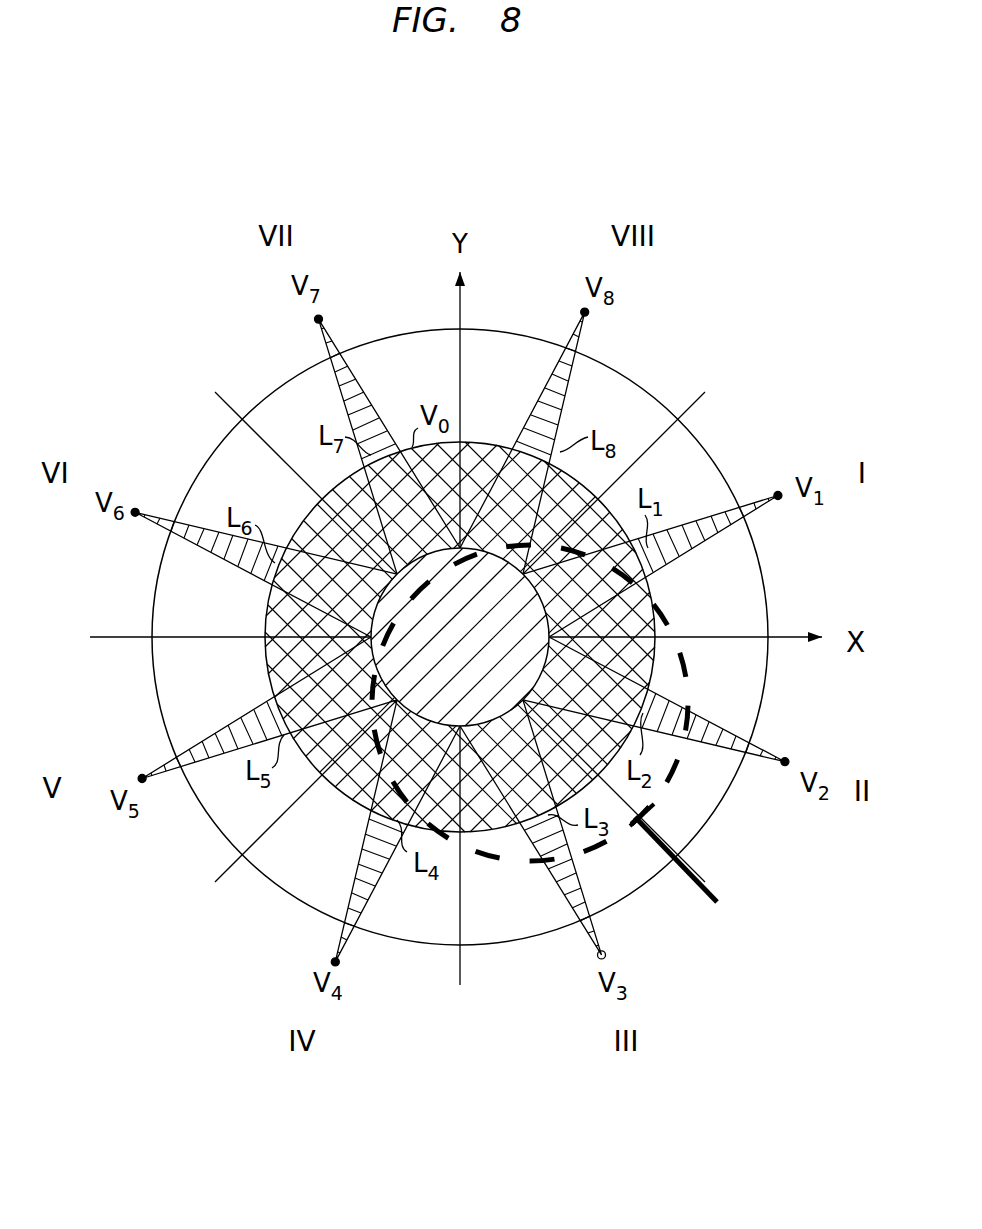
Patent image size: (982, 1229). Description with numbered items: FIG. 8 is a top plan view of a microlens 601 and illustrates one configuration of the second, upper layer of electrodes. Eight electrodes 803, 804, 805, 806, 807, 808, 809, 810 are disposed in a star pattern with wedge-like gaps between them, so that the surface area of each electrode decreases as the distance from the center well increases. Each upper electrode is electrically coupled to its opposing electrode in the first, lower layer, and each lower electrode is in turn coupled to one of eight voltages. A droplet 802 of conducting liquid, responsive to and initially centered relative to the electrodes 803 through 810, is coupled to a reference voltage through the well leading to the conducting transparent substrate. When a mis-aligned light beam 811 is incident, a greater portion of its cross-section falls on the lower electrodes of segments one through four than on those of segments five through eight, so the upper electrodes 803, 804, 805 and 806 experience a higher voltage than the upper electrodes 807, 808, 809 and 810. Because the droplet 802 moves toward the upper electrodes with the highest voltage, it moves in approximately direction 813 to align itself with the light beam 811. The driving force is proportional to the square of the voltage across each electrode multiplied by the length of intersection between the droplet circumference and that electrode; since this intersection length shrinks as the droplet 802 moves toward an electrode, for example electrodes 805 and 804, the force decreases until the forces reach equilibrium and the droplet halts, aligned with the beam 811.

The polygon mirror / scanning arrangement 601 is at (117, 185).
The droplet 802 is at (468, 440).
The electrode 803 is at (664, 535).
The electrode 804 is at (690, 715).
The electrode 805 is at (556, 882).
The electrode 806 is at (362, 845).
The electrode 807 is at (250, 708).
The electrode 808 is at (240, 572).
The electrode 809 is at (358, 393).
The electrode 810 is at (557, 430).
The light beam 811 is at (663, 620).
The direction 813 is at (707, 880).